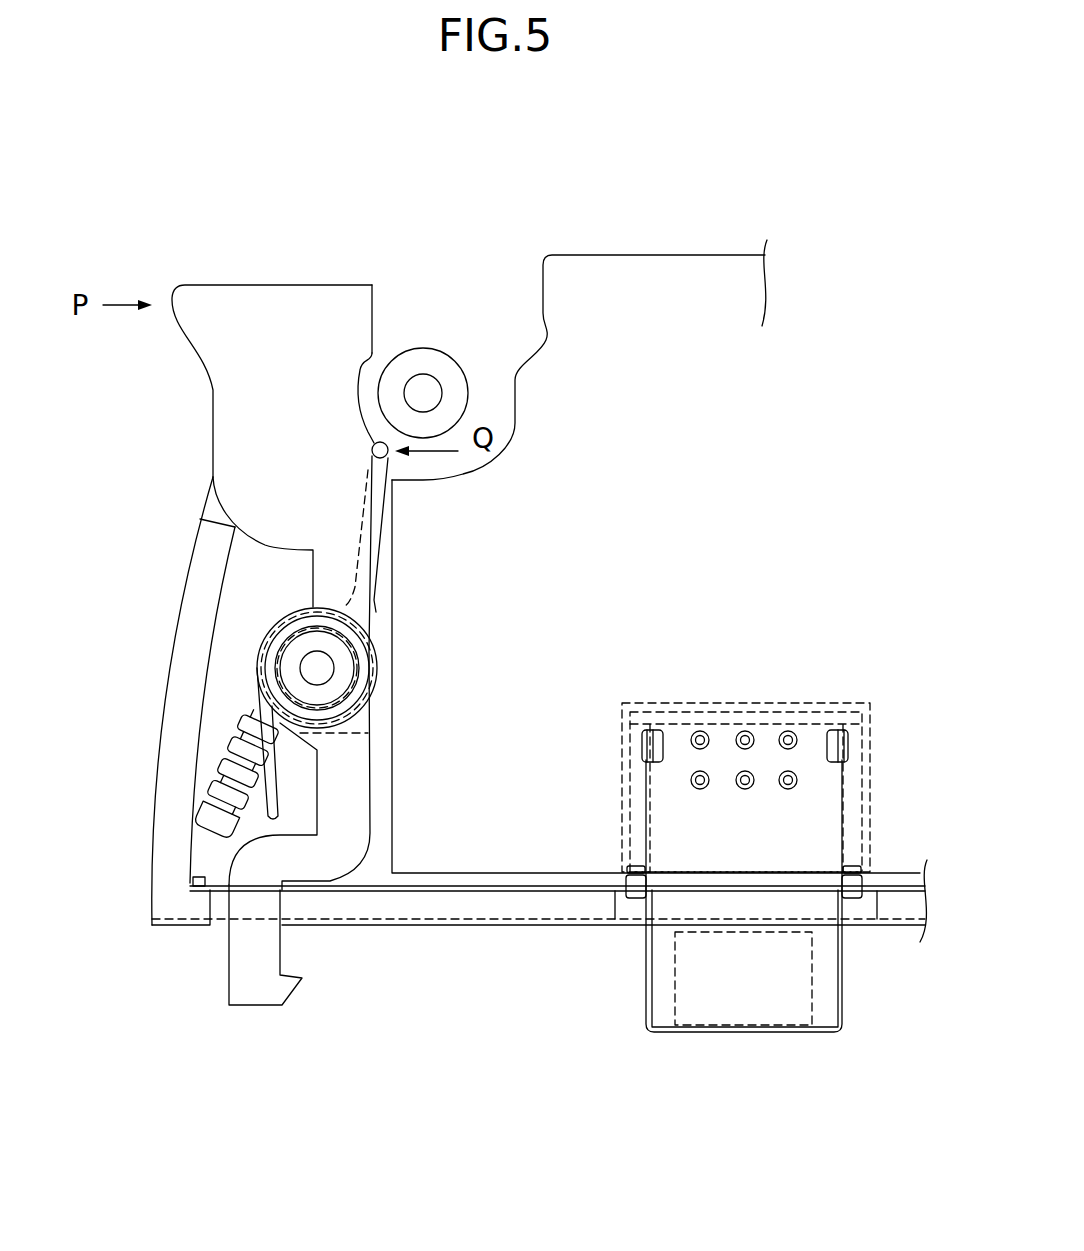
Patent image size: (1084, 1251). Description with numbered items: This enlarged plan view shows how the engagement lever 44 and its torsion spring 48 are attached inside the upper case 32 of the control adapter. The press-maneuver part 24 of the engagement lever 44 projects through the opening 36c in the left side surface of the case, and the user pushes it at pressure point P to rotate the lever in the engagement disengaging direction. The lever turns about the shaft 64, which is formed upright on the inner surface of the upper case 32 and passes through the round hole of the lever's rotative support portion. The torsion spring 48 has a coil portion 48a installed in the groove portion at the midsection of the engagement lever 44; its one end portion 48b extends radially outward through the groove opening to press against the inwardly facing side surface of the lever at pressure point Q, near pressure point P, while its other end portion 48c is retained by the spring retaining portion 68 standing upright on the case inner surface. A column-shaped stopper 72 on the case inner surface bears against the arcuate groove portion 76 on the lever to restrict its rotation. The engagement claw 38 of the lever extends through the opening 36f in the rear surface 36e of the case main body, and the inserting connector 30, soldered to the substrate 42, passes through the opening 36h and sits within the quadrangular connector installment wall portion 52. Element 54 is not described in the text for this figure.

The press-maneuver part 24 is at (232, 300).
The inserting connector 30 is at (738, 1017).
The upper case 32 is at (152, 640).
The opening 36c is at (222, 523).
The rear surface 36e is at (900, 930).
The opening 36f is at (208, 906).
The opening 36h is at (633, 920).
The engagement claw 38 is at (270, 995).
The substrate 42 is at (662, 282).
The engagement lever 44 is at (346, 278).
The torsion spring 48 is at (262, 618).
The coil portion 48a is at (370, 660).
The one end portion 48b is at (393, 465).
The other end portion 48c is at (273, 808).
The connector installment wall portion 52 is at (872, 795).
The guide surface 54 is at (175, 422).
The shaft 64 is at (362, 648).
The spring retaining portion 68 is at (226, 748).
The stopper 72 is at (463, 372).
The arcuate groove portion 76 is at (367, 373).